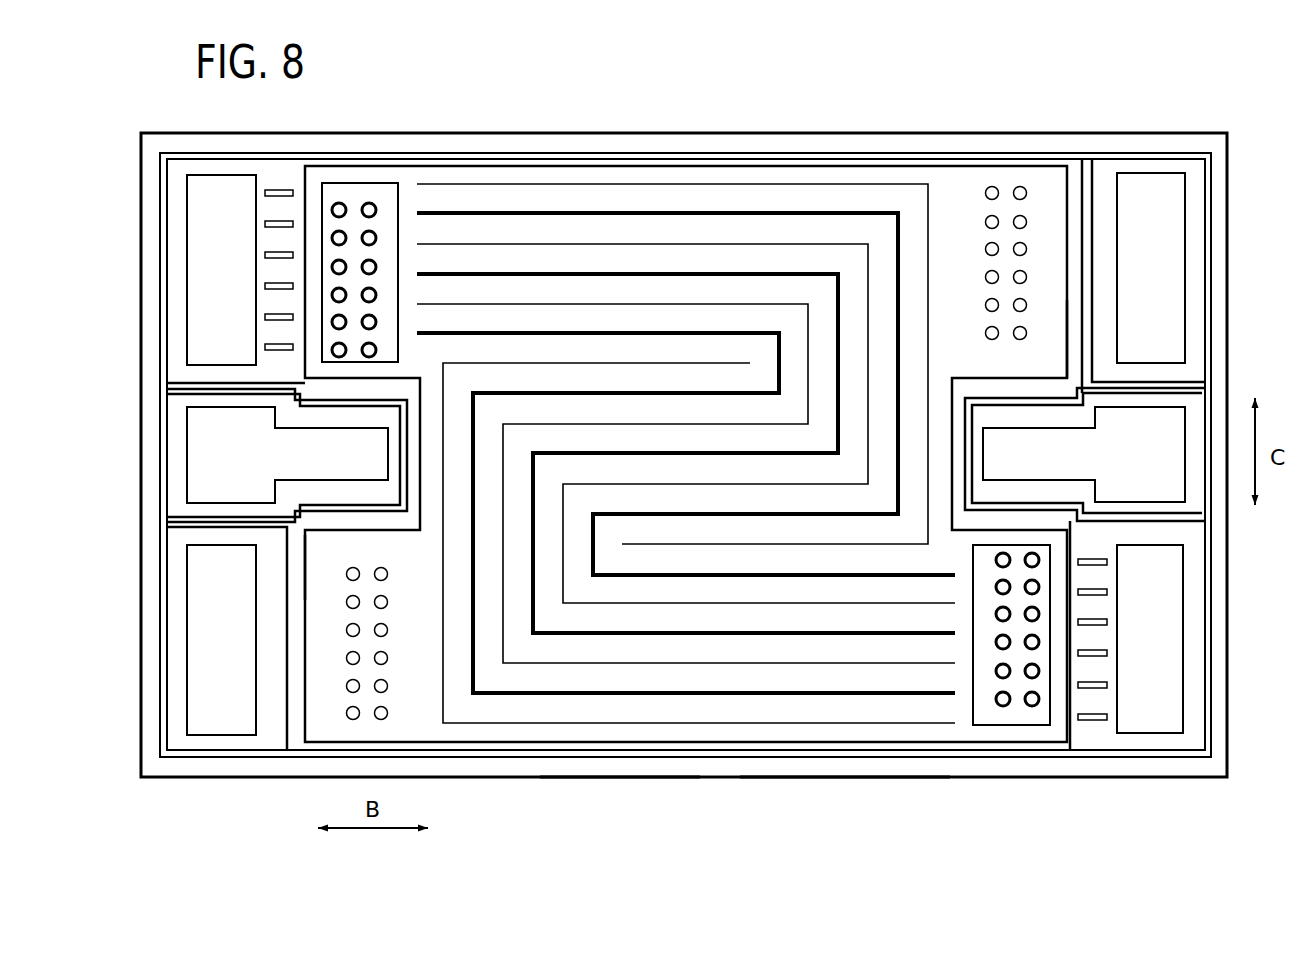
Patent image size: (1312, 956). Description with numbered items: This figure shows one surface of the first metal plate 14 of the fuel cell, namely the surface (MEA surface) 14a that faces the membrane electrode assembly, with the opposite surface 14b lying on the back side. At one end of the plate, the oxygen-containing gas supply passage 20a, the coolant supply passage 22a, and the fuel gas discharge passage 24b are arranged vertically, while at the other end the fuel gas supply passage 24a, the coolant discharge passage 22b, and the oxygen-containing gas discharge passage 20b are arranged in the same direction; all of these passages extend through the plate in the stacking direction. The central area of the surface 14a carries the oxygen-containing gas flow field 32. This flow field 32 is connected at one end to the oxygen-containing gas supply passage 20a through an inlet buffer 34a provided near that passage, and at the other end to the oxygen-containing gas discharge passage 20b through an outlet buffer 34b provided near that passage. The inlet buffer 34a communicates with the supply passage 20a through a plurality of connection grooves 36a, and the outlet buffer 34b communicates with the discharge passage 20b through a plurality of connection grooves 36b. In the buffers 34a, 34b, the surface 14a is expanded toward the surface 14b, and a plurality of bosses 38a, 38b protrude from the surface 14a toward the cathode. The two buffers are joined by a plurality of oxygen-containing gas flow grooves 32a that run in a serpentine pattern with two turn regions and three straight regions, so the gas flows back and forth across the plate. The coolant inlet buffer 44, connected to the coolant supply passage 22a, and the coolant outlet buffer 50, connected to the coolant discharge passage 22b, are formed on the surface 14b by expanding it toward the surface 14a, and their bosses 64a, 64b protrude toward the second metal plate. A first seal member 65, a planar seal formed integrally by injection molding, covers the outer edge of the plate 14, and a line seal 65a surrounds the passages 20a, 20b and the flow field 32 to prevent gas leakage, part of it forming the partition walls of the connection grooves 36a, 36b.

The first metal plate 14 is at (880, 91).
The surface (MEA surface) 14a is at (613, 763).
The surface 14b is at (826, 763).
The oxygen-containing gas supply passage 20a is at (221, 270).
The oxygen-containing gas discharge passage 20b is at (1150, 639).
The coolant supply passage 22a is at (287, 455).
The coolant discharge passage 22b is at (1085, 454).
The fuel gas supply passage 24a is at (1151, 268).
The fuel gas discharge passage 24b is at (221, 640).
The oxygen-containing gas flow field 32 is at (686, 210).
The oxygen-containing gas flow grooves 32a is at (617, 244).
The inlet buffer 34a is at (355, 198).
The outlet buffer 34b is at (1019, 710).
The connection grooves 36a is at (285, 333).
The connection grooves 36b is at (1093, 576).
The bosses 38a is at (337, 238).
The bosses 38b is at (1040, 672).
The inlet buffer (coolant buffer) 44 is at (322, 572).
The outlet buffer (coolant buffer) 50 is at (1052, 336).
The bosses 64a is at (347, 686).
The bosses 64b is at (1027, 221).
The first seal member 65 is at (878, 150).
The line seal 65a is at (470, 155).